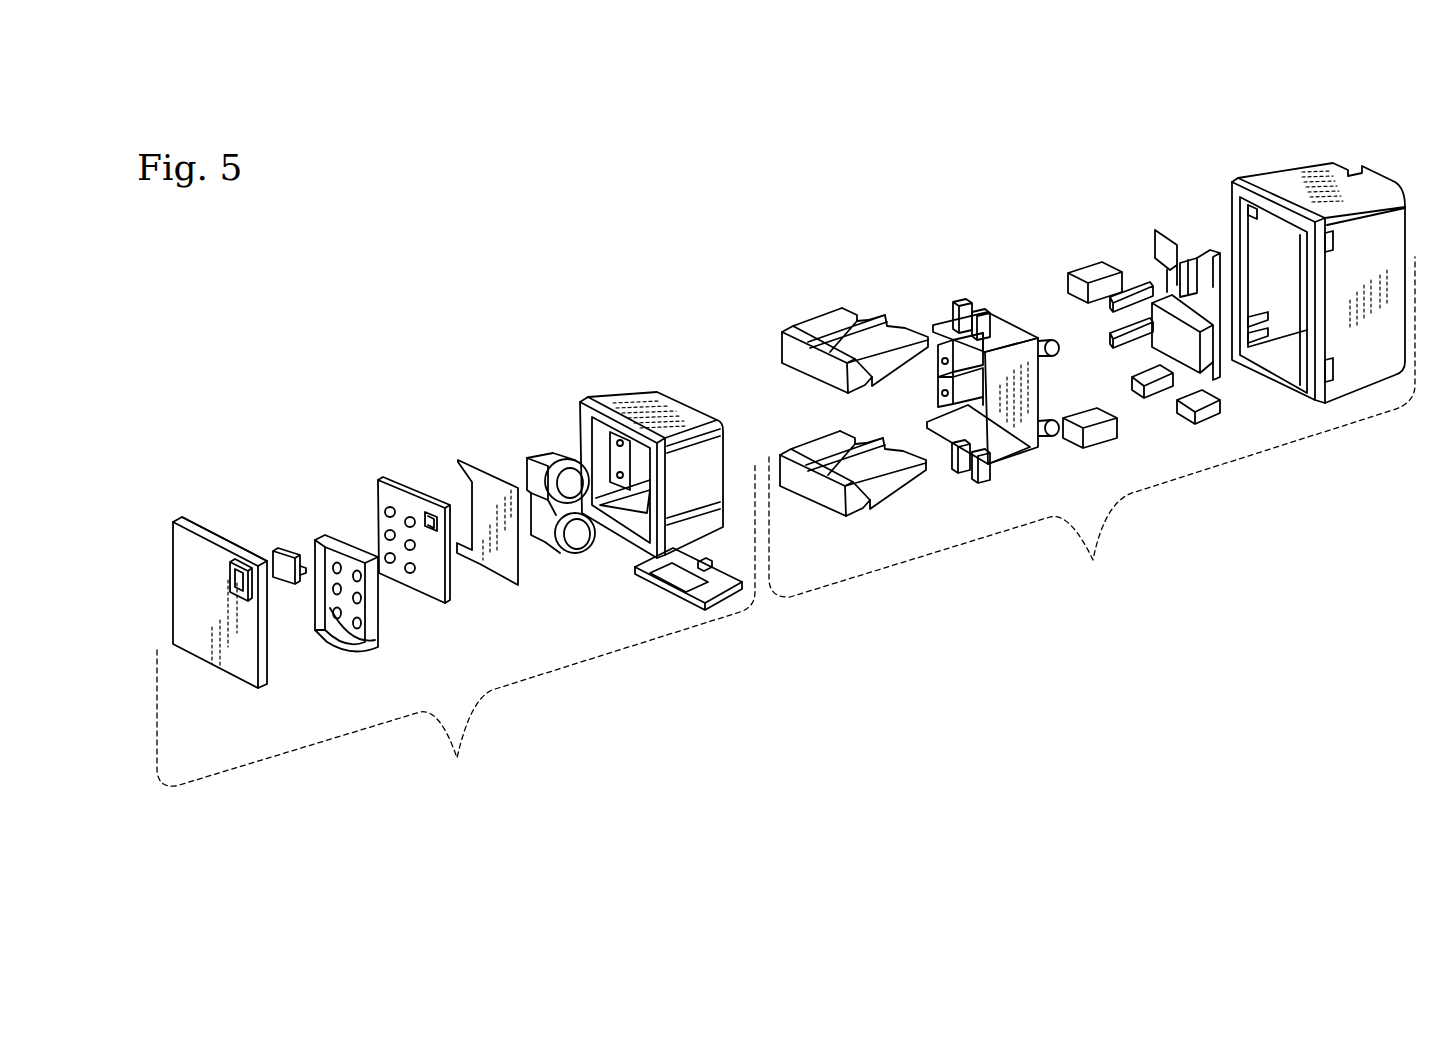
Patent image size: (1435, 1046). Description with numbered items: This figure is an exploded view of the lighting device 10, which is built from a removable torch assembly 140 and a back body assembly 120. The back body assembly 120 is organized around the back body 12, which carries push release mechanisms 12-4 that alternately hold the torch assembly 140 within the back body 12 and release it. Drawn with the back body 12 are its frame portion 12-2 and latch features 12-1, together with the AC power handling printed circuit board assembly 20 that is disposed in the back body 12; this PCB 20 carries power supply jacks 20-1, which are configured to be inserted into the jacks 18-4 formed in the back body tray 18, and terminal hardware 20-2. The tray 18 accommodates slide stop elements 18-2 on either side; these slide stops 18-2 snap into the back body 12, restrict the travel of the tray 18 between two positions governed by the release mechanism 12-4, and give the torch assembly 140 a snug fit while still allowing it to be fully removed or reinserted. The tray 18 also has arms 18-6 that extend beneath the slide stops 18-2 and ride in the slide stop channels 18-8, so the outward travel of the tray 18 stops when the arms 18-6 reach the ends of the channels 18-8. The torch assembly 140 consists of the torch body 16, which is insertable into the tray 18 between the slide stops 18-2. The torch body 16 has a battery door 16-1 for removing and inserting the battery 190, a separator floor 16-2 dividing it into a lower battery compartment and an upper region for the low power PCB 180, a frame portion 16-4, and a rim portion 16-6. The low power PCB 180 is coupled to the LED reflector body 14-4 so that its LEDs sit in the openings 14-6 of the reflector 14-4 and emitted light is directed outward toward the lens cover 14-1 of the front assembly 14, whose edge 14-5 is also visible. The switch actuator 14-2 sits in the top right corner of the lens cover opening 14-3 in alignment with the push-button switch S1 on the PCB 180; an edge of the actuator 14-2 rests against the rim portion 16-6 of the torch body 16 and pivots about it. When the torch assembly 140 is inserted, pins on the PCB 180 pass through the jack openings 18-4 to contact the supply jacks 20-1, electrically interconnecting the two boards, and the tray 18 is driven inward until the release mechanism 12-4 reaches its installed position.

The lighting device 10 is at (266, 268).
The back body 12 is at (1412, 216).
The housing latch tabs 12-1 is at (1256, 320).
The housing front frame 12-2 is at (1285, 380).
The push release mechanism 12-4 is at (1098, 267).
The faceplate assembly 14 is at (152, 556).
The lens cover 14-1 is at (224, 583).
The switch actuator 14-2 is at (284, 552).
The lens cover opening 14-3 is at (243, 584).
The LED reflector body 14-4 is at (338, 546).
The faceplate edge 14-5 is at (210, 540).
The openings 14-6 is at (330, 612).
The torch body 16 is at (640, 374).
The battery door 16-1 is at (685, 568).
The separator floor 16-2 is at (462, 463).
The frame 16-4 is at (594, 407).
The rim portion 16-6 is at (618, 474).
The back body tray 18 is at (950, 292).
The slide stop elements 18-2 is at (810, 330).
The jacks 18-4 is at (942, 392).
The arms 18-6 is at (980, 310).
The slide stop channels 18-8 is at (840, 333).
The AC power handling printed circuit board assembly 20 is at (1145, 232).
The power supply jacks 20-1 is at (1112, 335).
The terminal hardware 20-2 is at (1180, 405).
The back body assembly 120 is at (1092, 427).
The torch assembly 140 is at (456, 626).
The low power PCB 180 is at (388, 490).
The battery 190 is at (575, 557).
The push-button switch S1 is at (426, 518).